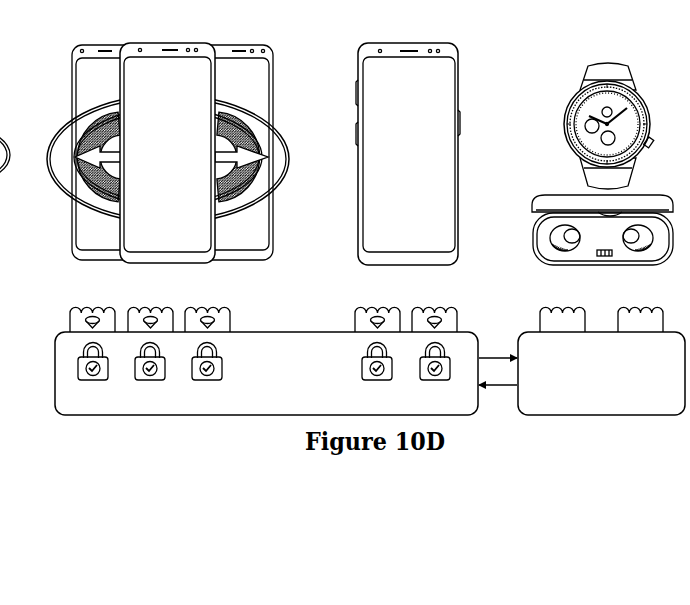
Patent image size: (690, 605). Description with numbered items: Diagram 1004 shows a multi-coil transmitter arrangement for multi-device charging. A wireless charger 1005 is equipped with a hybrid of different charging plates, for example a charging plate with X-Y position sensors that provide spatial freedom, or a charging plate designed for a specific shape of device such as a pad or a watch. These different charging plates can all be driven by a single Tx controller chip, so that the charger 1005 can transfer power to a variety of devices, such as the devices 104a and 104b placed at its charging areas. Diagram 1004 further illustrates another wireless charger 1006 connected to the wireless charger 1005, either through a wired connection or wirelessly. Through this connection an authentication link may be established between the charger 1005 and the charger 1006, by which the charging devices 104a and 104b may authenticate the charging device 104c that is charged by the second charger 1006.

The diagram 1004 is at (335, 31).
The device 104a is at (157, 75).
The device 104b is at (447, 53).
The charging device 104c is at (618, 80).
The wireless charger 1005 is at (77, 340).
The wireless charger 1006 is at (538, 358).